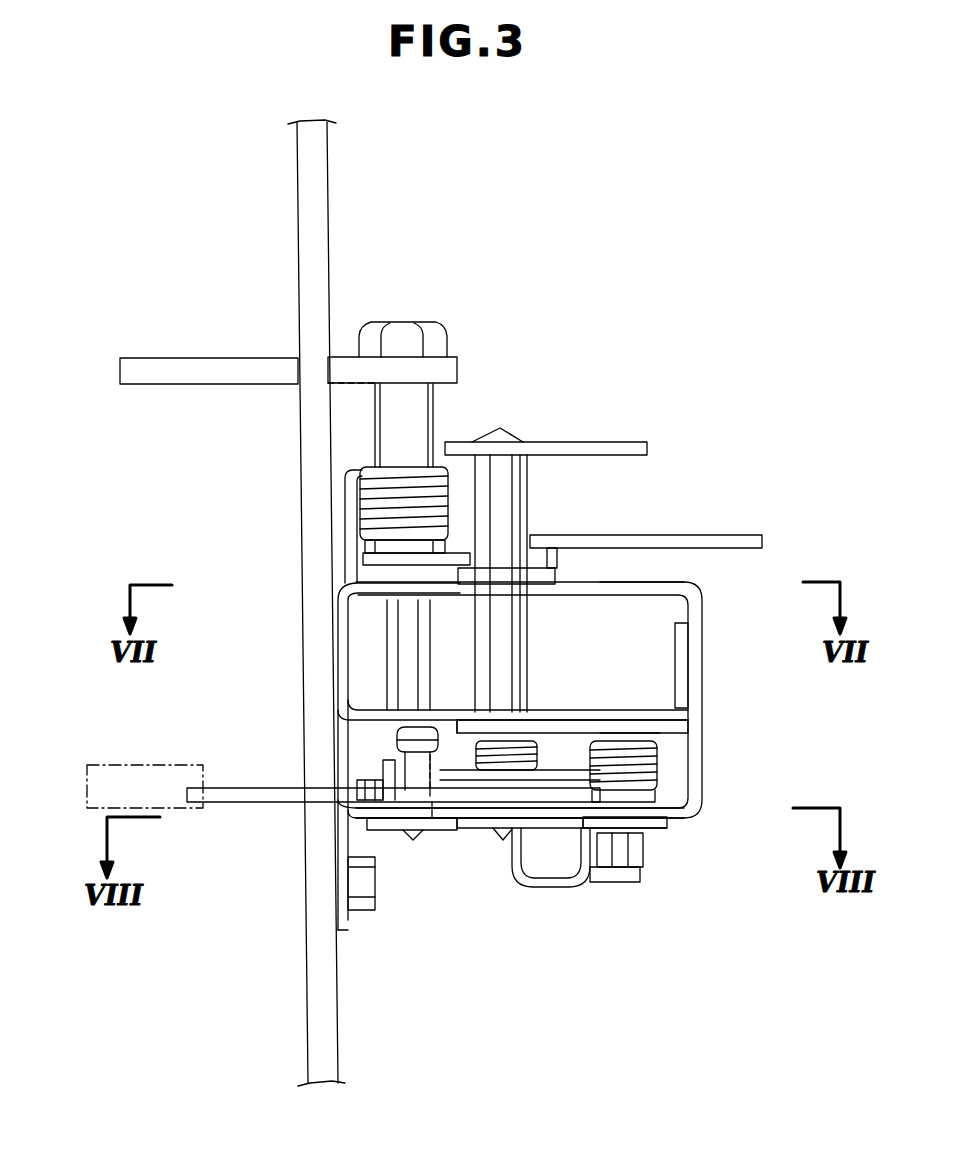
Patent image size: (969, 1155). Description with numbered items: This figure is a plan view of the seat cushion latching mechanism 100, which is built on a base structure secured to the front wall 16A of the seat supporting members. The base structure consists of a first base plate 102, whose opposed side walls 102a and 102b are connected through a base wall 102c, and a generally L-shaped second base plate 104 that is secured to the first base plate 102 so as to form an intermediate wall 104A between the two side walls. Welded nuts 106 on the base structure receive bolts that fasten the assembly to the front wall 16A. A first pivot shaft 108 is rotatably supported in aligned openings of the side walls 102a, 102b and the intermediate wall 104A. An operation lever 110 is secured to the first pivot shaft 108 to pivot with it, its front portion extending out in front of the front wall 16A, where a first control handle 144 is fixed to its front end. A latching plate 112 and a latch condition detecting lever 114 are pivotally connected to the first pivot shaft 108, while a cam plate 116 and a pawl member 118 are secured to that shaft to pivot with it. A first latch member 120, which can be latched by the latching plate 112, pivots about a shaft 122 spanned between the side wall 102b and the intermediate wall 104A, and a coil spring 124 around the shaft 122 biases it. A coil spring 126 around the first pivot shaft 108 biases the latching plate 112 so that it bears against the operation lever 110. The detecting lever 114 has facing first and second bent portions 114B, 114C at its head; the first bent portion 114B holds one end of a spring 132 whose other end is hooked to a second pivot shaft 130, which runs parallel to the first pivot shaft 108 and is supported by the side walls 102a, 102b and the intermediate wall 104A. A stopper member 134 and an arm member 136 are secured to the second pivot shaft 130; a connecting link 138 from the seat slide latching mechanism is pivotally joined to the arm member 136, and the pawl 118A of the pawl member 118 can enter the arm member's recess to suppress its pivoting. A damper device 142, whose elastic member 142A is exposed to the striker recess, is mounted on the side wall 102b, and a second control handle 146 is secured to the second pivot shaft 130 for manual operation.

The front wall 16A is at (297, 236).
The seat cushion latching mechanism 100 is at (660, 352).
The first base plate 102 is at (708, 609).
The side wall 102a is at (655, 585).
The side wall 102b is at (600, 872).
The base wall 102c is at (702, 655).
The second base plate 104 is at (322, 583).
The intermediate wall 104A is at (548, 720).
The welded nut 106 is at (360, 500).
The first pivot shaft 108 is at (500, 428).
The operation lever 110 is at (245, 806).
The latching plate 112 is at (470, 722).
The latch condition detecting lever 114 is at (495, 792).
The first bent portion 114B is at (420, 728).
The second bent portion 114C is at (432, 820).
The cam plate 116 is at (580, 442).
The pawl member 118 is at (505, 568).
The pawl 118A is at (555, 560).
The first latch member 120 is at (690, 725).
The shaft 122 is at (620, 720).
The coil spring 124 is at (665, 760).
The coil spring 126 is at (548, 855).
The second pivot shaft 130 is at (400, 322).
The spring 132 is at (395, 770).
The stopper member 134 is at (370, 785).
The arm member 136 is at (363, 558).
The connecting link 138 is at (736, 535).
The damper device 142 is at (575, 912).
The elastic member 142A is at (645, 846).
The first control handle 144 is at (145, 765).
The second control handle 146 is at (190, 358).